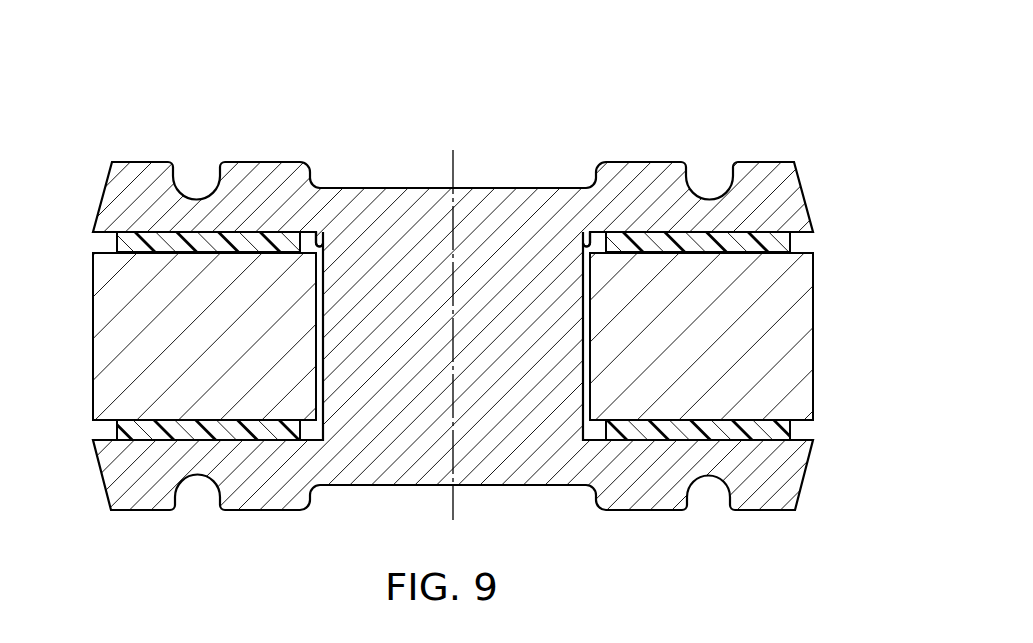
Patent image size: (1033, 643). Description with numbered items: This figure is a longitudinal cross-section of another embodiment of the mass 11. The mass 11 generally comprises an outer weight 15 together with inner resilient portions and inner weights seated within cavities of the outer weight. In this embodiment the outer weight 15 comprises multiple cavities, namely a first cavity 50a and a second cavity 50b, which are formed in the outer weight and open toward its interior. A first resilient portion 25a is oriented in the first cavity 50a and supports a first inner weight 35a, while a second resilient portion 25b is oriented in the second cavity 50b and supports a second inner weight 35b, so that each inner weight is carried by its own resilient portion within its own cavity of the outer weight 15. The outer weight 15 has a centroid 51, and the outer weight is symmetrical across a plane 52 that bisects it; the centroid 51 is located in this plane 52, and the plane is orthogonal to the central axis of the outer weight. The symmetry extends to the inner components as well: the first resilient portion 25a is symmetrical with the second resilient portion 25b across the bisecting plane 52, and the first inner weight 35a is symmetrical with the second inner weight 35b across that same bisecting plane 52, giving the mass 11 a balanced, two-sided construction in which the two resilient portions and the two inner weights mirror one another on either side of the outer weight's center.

The mass 11 is at (679, 122).
The outer weight 15 is at (480, 188).
The first resilient portion 25a is at (118, 433).
The second resilient portion 25b is at (788, 433).
The first inner weight 35a is at (97, 323).
The second inner weight 35b is at (808, 323).
The first cavity 50a is at (322, 246).
The second cavity 50b is at (584, 246).
The centroid 51 is at (452, 333).
The plane 52 is at (449, 506).